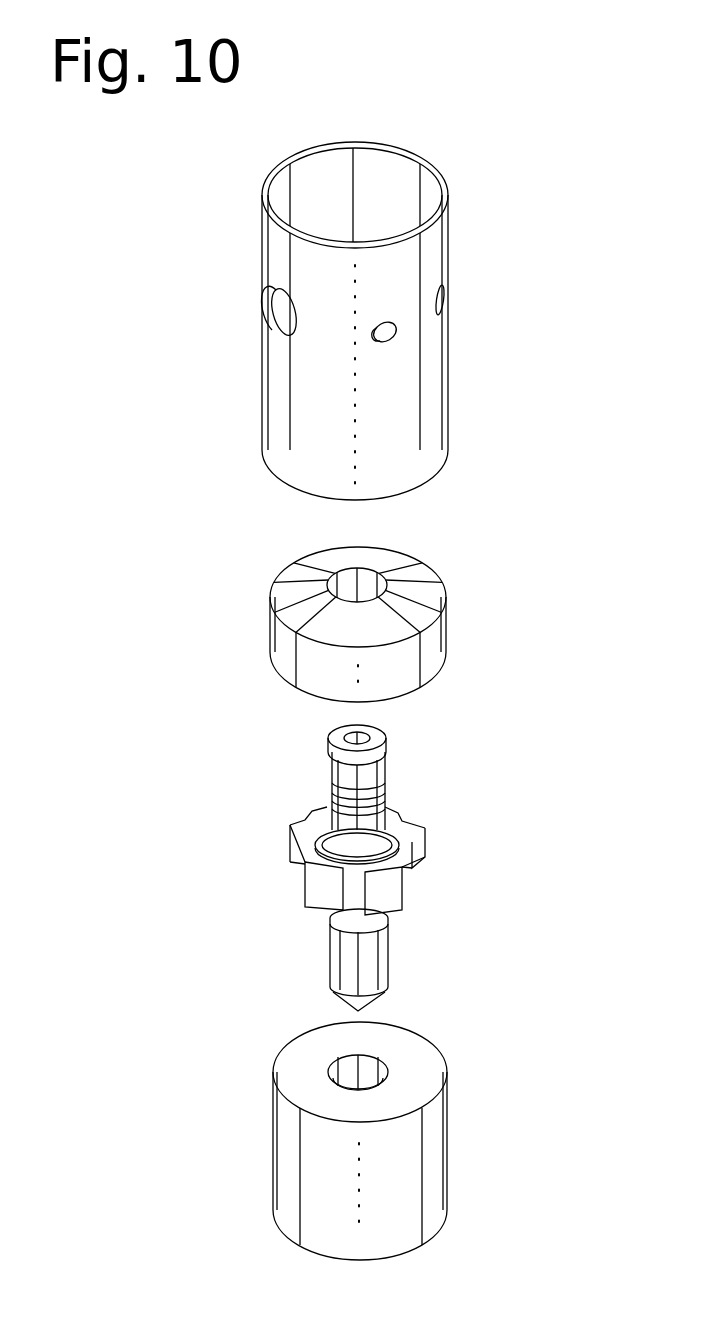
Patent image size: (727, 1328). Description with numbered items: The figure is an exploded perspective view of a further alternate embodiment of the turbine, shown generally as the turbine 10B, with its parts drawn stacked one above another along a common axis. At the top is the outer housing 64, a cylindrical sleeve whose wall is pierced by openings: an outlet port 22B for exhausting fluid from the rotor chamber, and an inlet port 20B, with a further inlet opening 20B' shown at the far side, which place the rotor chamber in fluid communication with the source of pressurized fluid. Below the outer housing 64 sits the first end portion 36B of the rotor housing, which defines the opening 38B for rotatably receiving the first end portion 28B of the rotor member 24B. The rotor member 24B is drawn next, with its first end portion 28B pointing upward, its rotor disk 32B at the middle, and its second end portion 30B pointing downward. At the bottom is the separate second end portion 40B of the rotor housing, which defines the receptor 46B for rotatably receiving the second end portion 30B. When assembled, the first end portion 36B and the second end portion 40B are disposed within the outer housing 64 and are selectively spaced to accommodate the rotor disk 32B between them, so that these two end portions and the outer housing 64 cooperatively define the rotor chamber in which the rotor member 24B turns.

The turbine 10B is at (490, 147).
The outer housing 64 is at (275, 413).
The outlet port 22B is at (283, 313).
The inlet port 20B is at (444, 374).
The inlet port 20B' is at (518, 298).
The first end portion 36B is at (413, 578).
The opening 38B is at (347, 578).
The first end portion of the rotor member 28B is at (388, 770).
The rotor disk 32B is at (288, 853).
The second end portion of the rotor member 30B is at (388, 952).
The rotor member 24B is at (330, 952).
The receptor 46B is at (368, 1062).
The second end portion 40B is at (284, 1160).